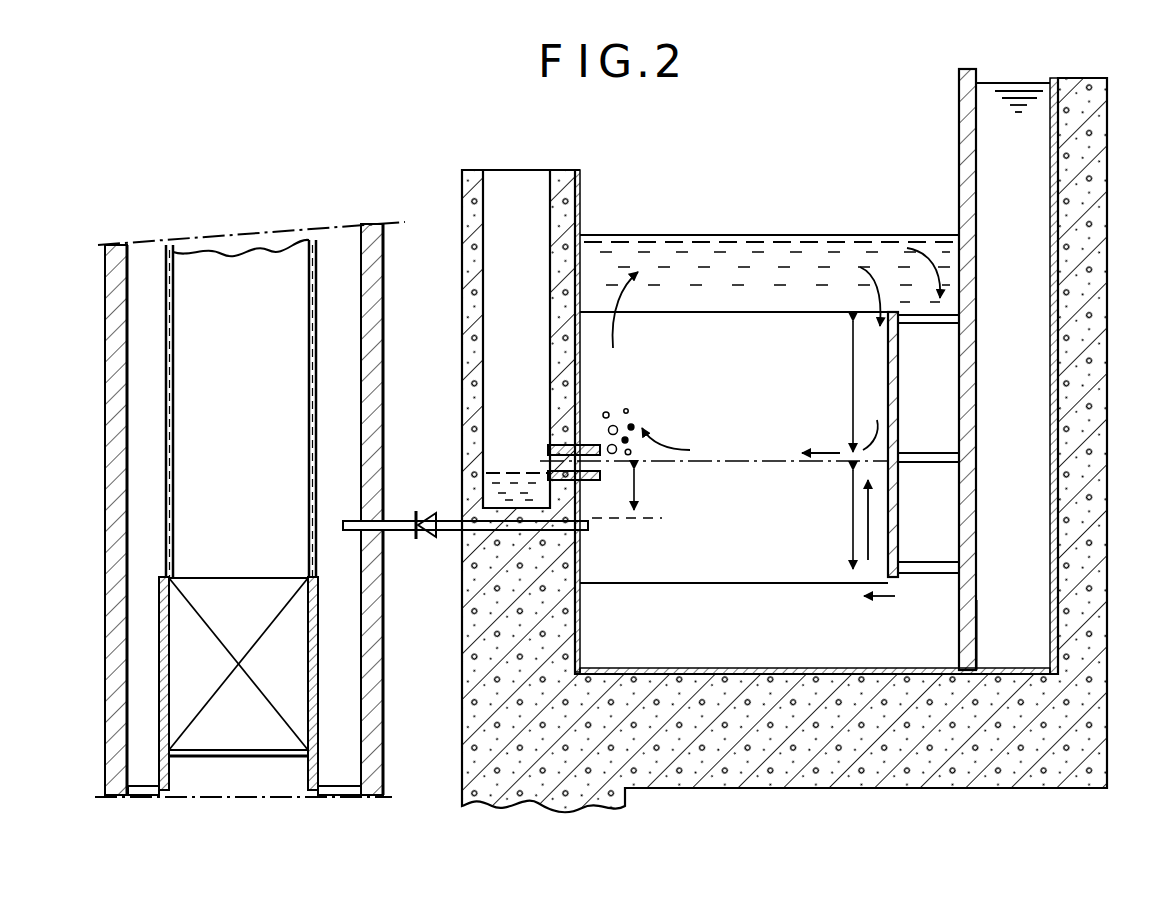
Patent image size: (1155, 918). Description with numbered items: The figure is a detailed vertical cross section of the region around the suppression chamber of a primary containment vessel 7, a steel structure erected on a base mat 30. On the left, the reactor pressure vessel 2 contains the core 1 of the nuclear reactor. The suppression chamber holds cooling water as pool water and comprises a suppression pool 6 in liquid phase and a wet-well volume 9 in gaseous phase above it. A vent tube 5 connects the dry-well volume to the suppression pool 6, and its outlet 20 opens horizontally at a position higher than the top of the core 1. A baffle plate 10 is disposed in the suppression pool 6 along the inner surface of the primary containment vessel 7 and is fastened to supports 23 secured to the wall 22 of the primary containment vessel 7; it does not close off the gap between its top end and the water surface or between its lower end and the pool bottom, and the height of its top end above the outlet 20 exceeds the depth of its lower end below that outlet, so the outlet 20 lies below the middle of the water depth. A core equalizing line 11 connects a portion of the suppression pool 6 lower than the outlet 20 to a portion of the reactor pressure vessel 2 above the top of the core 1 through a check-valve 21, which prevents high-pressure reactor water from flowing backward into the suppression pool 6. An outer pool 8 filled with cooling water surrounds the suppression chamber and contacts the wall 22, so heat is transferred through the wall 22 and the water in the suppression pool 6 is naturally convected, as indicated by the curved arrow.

The core 1 is at (296, 670).
The reactor pressure vessel 2 is at (383, 297).
The vent tube 5 is at (523, 195).
The suppression pool 6 is at (700, 650).
The primary containment vessel 7 is at (987, 93).
The outer pool 8 is at (998, 224).
The wet-well volume 9 is at (848, 202).
The baffle plate 10 is at (893, 580).
The core equalizing line 11 is at (389, 535).
The outlet 20 is at (549, 452).
The check-valve 21 is at (426, 537).
The wall 22 is at (976, 612).
The supports 23 is at (936, 452).
The base mat 30 is at (878, 790).